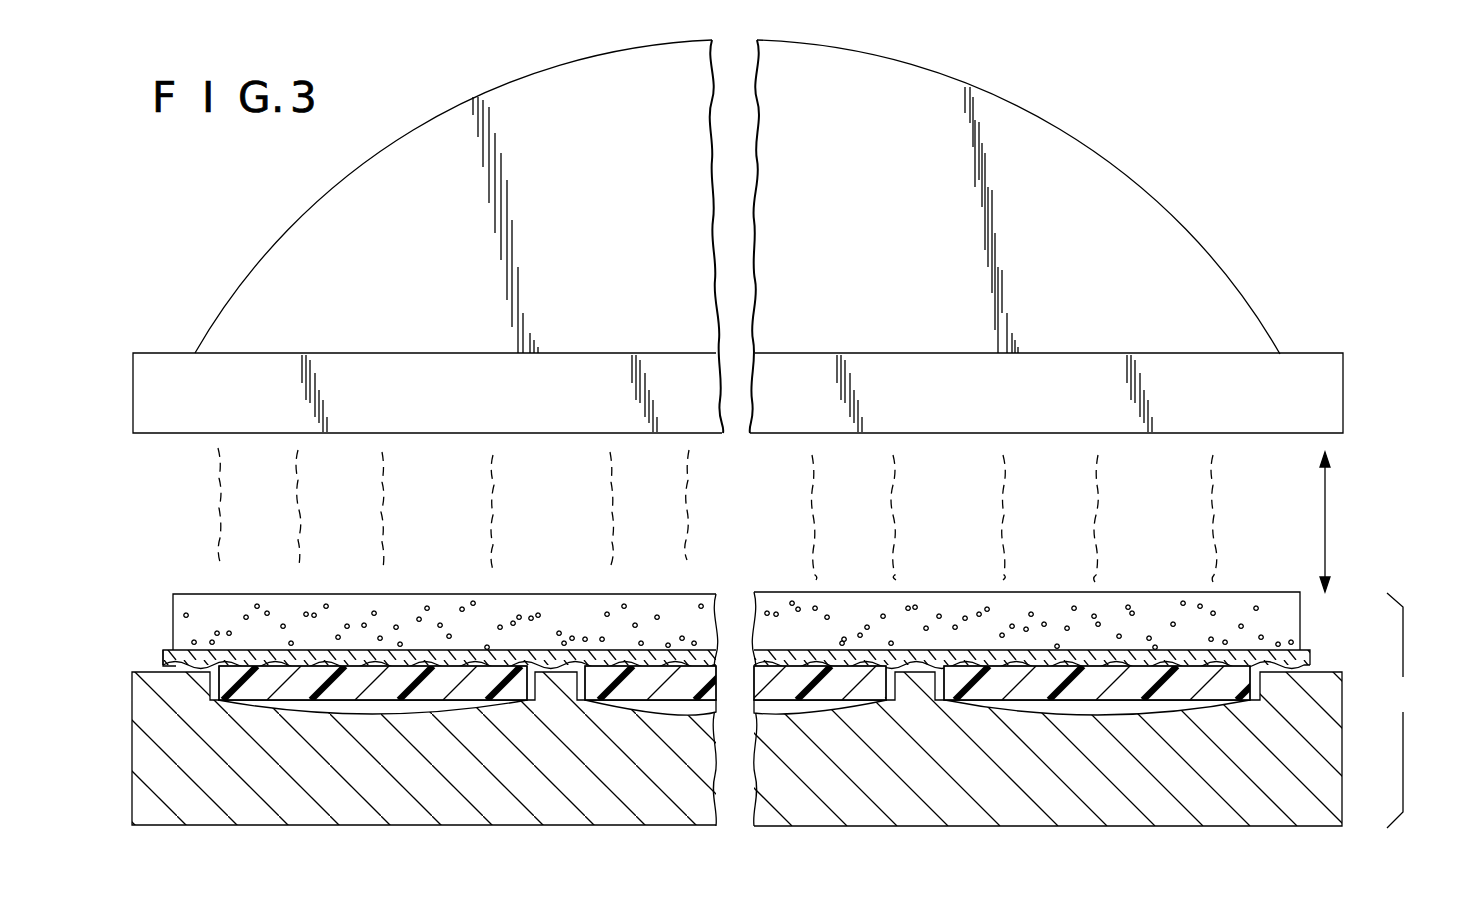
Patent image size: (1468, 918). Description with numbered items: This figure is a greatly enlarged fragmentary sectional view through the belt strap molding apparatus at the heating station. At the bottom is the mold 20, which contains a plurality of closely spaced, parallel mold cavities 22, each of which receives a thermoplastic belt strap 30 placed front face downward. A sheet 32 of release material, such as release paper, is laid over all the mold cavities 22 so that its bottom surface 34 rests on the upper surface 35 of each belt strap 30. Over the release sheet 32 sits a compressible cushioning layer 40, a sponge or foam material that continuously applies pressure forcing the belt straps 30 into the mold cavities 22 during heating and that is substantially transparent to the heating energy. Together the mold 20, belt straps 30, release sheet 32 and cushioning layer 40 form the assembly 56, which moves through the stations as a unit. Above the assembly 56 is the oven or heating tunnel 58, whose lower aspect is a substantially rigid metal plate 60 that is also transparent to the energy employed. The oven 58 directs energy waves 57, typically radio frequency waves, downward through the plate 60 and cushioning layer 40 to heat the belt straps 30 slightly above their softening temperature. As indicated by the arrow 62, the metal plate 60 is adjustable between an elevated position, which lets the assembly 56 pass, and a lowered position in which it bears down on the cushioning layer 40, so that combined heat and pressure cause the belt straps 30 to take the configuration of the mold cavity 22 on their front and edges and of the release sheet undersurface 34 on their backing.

The mold 20 is at (1318, 786).
The mold cavity 22 is at (1089, 713).
The belt strap 30 is at (1236, 688).
The release sheet 32 is at (1312, 656).
The bottom surface of release sheet 34 is at (172, 668).
The upper surface of belt strap 35 is at (470, 660).
The cushioning layer 40 is at (1290, 618).
The assembly 56 is at (1403, 710).
The energy waves 57 is at (1213, 513).
The oven 58 is at (1123, 170).
The metal plate 60 is at (1343, 378).
The arrow 62 is at (1326, 494).